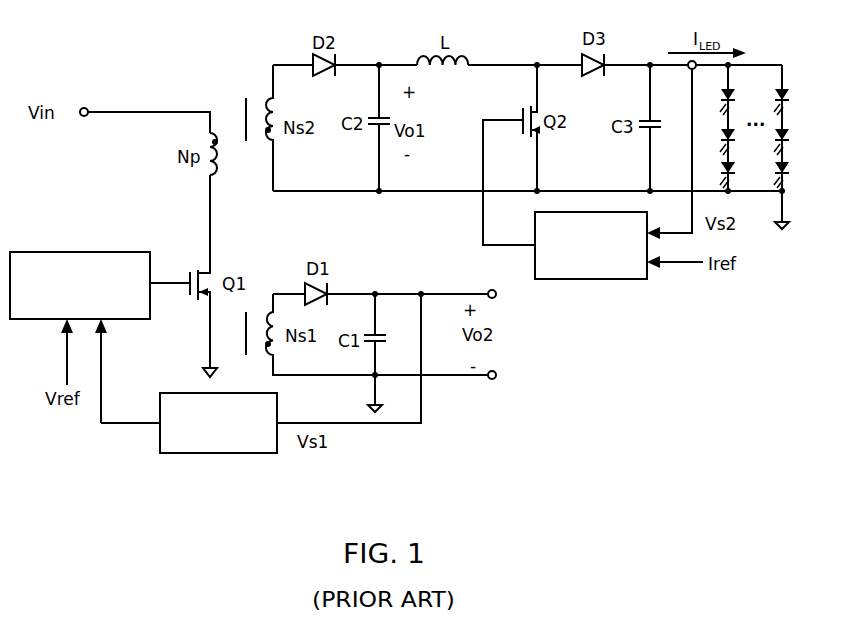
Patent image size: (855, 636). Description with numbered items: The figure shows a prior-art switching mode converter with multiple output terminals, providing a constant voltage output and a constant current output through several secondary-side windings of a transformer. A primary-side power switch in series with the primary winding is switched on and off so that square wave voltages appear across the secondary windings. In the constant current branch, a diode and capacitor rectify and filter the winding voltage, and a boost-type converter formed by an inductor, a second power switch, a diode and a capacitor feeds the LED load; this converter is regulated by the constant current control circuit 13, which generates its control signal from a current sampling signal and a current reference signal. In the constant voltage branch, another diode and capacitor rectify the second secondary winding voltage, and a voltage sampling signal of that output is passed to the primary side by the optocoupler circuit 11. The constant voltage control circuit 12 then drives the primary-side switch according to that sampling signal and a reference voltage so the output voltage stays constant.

The optocoupler circuit 11 is at (207, 434).
The constant voltage control circuit 12 is at (69, 296).
The constant current control circuit 13 is at (580, 256).